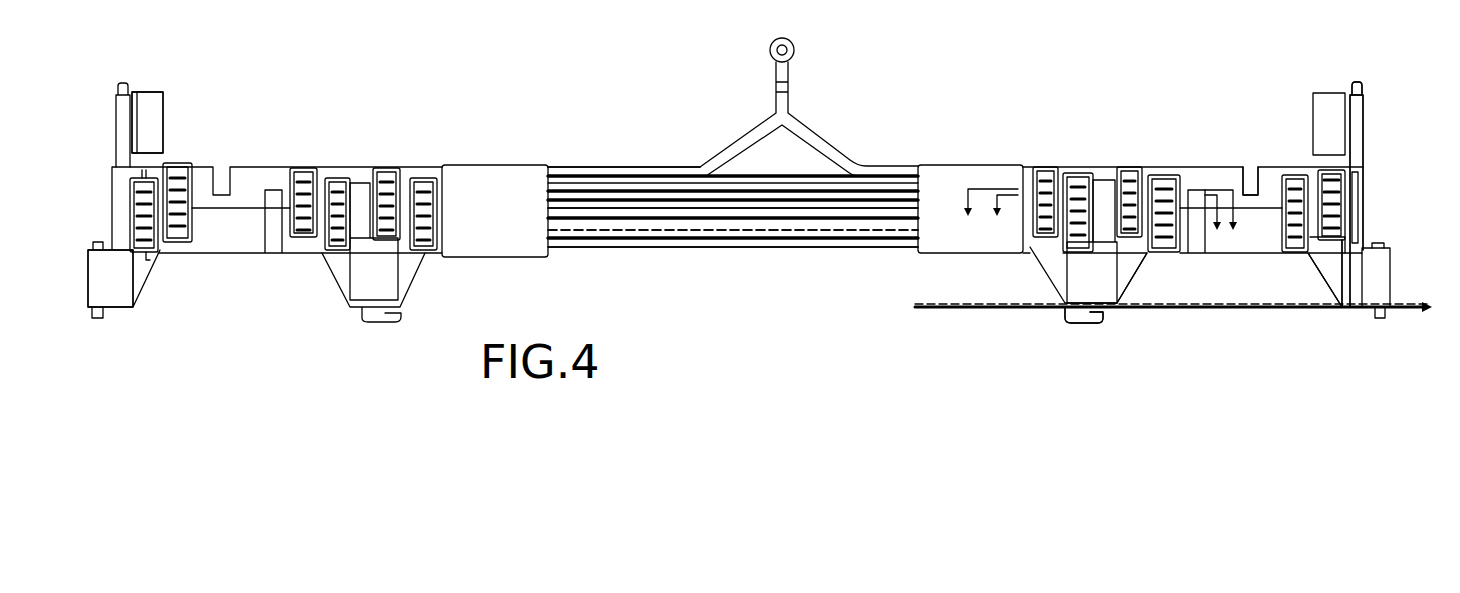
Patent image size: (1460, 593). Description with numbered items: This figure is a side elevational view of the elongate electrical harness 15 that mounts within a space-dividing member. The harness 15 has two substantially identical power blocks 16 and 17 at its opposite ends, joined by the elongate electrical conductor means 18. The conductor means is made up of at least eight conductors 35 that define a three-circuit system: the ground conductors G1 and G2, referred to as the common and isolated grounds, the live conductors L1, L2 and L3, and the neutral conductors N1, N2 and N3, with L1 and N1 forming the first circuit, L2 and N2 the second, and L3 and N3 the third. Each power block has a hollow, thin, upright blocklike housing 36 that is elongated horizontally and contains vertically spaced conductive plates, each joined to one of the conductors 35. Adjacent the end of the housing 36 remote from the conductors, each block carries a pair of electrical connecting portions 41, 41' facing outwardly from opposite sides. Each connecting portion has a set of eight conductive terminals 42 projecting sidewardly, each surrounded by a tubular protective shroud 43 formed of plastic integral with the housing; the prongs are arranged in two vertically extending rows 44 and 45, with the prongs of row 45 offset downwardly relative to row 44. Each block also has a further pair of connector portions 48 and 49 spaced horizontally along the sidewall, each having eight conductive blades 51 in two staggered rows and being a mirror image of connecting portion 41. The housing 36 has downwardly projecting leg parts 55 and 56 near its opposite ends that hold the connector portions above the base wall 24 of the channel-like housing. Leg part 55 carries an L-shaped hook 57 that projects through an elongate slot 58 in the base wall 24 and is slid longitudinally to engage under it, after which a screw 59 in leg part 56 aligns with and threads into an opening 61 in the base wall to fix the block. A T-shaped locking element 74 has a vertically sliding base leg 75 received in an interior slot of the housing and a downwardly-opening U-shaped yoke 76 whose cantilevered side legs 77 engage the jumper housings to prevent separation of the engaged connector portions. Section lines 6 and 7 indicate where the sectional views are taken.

The electrical harness 15 is at (930, 100).
The power block 16 is at (984, 166).
The power block 17 is at (488, 166).
The electrical conductor means 18 is at (648, 172).
The base wall 24 is at (967, 308).
The conductors 35 is at (595, 247).
The housing 36 is at (1217, 167).
The electrical connecting portion 41 is at (1279, 317).
The electrical connecting portion 41' is at (184, 253).
The conductive terminals 42 is at (1335, 173).
The tubular protective shroud 43 is at (1345, 192).
The row 44 is at (1325, 240).
The row 45 is at (1297, 252).
The electrical connector portion 48 is at (386, 166).
The electrical connector portion 49 is at (313, 166).
The conductive blades 51 is at (1048, 235).
The leg part 55 is at (1127, 280).
The leg part 56 is at (1367, 275).
The L-shaped hook 57 is at (1082, 320).
The slot 58 is at (1108, 307).
The screw 59 is at (1383, 242).
The opening 61 is at (1383, 315).
The locking element 74 is at (1366, 108).
The base leg 75 is at (123, 120).
The yoke 76 is at (150, 90).
The side legs 77 is at (150, 128).
The section line 6 is at (1098, 221).
The section line 7 is at (1104, 224).
The ground conductor G1 is at (573, 173).
The ground conductor G2 is at (613, 183).
The live conductor L1 is at (838, 195).
The live conductor L2 is at (672, 213).
The live conductor L3 is at (790, 233).
The neutral conductor N1 is at (865, 205).
The neutral conductor N2 is at (703, 223).
The neutral conductor N3 is at (817, 247).